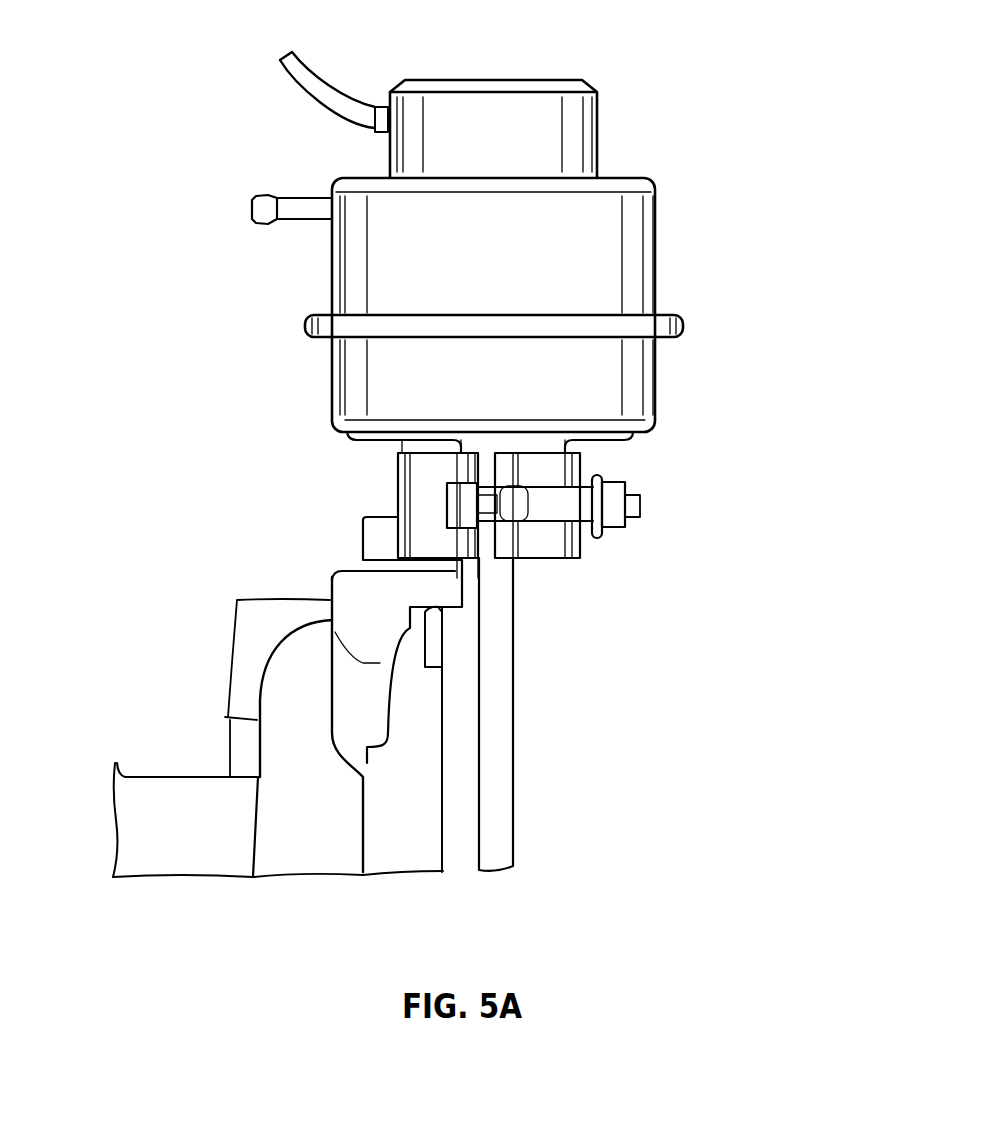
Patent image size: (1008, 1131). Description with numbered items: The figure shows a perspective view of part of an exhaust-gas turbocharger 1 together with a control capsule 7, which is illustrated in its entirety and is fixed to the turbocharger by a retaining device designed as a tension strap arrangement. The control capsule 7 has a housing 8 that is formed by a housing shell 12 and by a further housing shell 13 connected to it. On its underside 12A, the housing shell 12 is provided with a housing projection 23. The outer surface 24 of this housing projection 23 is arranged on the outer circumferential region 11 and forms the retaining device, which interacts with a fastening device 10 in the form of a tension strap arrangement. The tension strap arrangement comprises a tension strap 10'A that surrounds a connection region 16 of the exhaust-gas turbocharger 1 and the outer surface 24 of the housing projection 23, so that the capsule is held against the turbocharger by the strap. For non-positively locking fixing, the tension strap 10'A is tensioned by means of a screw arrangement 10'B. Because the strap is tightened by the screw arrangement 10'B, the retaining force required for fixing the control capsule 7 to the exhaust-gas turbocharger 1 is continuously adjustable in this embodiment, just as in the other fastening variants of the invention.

The exhaust-gas turbocharger 1 is at (102, 736).
The control capsule 7 is at (672, 113).
The housing 8 is at (685, 192).
The fastening device 10 is at (480, 580).
The tension strap 10'A is at (306, 528).
The screw arrangement 10'B is at (641, 575).
The outer circumferential region 11 is at (567, 445).
The housing shell 12 is at (638, 376).
The underside 12A is at (625, 430).
The further housing shell 13 is at (333, 185).
The connection region 16 is at (415, 448).
The housing projection 23 is at (340, 431).
The outer surface 24 is at (518, 443).